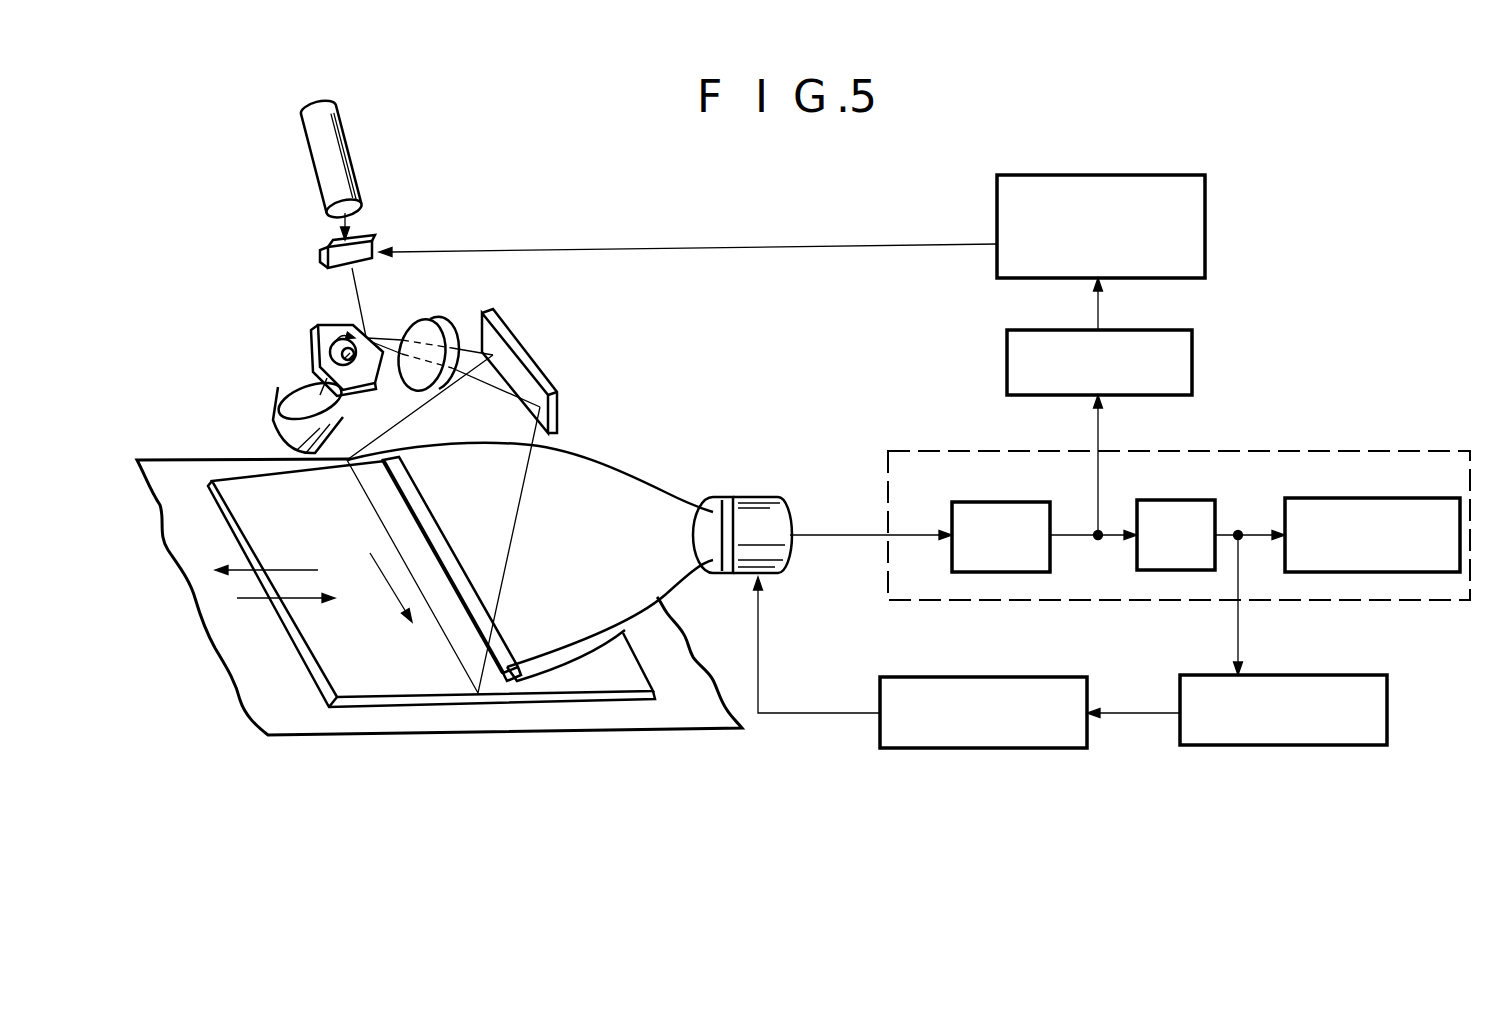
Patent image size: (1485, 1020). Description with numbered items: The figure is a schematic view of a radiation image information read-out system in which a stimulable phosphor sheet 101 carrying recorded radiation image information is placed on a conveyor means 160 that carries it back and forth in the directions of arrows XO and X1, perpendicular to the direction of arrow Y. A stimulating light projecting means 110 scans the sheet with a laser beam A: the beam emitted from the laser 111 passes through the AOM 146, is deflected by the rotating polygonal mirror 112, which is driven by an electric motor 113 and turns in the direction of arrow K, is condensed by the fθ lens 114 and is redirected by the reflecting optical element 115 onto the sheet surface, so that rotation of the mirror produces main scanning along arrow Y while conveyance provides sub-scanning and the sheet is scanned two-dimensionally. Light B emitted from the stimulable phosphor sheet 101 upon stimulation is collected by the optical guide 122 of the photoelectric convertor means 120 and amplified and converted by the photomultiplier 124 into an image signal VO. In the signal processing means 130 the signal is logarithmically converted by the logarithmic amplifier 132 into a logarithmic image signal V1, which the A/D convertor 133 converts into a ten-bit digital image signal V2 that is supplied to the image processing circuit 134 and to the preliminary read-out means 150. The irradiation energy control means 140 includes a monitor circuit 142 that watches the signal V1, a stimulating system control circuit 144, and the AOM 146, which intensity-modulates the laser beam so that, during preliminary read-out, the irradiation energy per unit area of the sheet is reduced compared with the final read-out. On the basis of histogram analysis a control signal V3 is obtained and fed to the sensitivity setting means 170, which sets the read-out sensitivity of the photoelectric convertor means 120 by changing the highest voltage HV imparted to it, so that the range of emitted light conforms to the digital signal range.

The stimulable phosphor sheet 101 is at (425, 683).
The stimulating light projecting means 110 is at (287, 302).
The semiconductor laser pumped solid state laser 111 is at (352, 162).
The rotating polygonal mirror 112 is at (315, 357).
The electric motor 113 is at (280, 402).
The fθ lens 114 is at (433, 320).
The reflecting optical element 115 is at (522, 350).
The photoelectric convertor means 120 is at (687, 456).
The optical guide 122 is at (622, 510).
The photomultiplier 124 is at (753, 508).
The signal processing means 130 is at (1243, 450).
The logarithmic amplifier 132 is at (988, 500).
The A/D convertor 133 is at (1198, 500).
The image processing circuit 134 is at (1370, 498).
The irradiation energy control means 140 is at (981, 181).
The monitor circuit 142 is at (1192, 334).
The stimulating system control circuit 144 is at (1238, 232).
The AOM (acoustooptic modulator) 146 is at (373, 244).
The preliminary read-out means 150 is at (1277, 745).
The conveyor means 160 is at (315, 717).
The sensitivity setting means 170 is at (1030, 748).
The direction of rotation of polygonal mirror K is at (330, 327).
The laser beam A is at (510, 560).
The emitted light B is at (463, 628).
The sub-scanning direction X1 is at (286, 568).
The sub-scanning direction XO is at (263, 602).
The main scanning direction Y is at (382, 574).
The image signal VO is at (838, 537).
The logarithmic image signal V1 is at (1105, 532).
The digital image signal V2 is at (1247, 530).
The control signal V3 is at (1140, 715).
The highest voltage HV is at (857, 715).